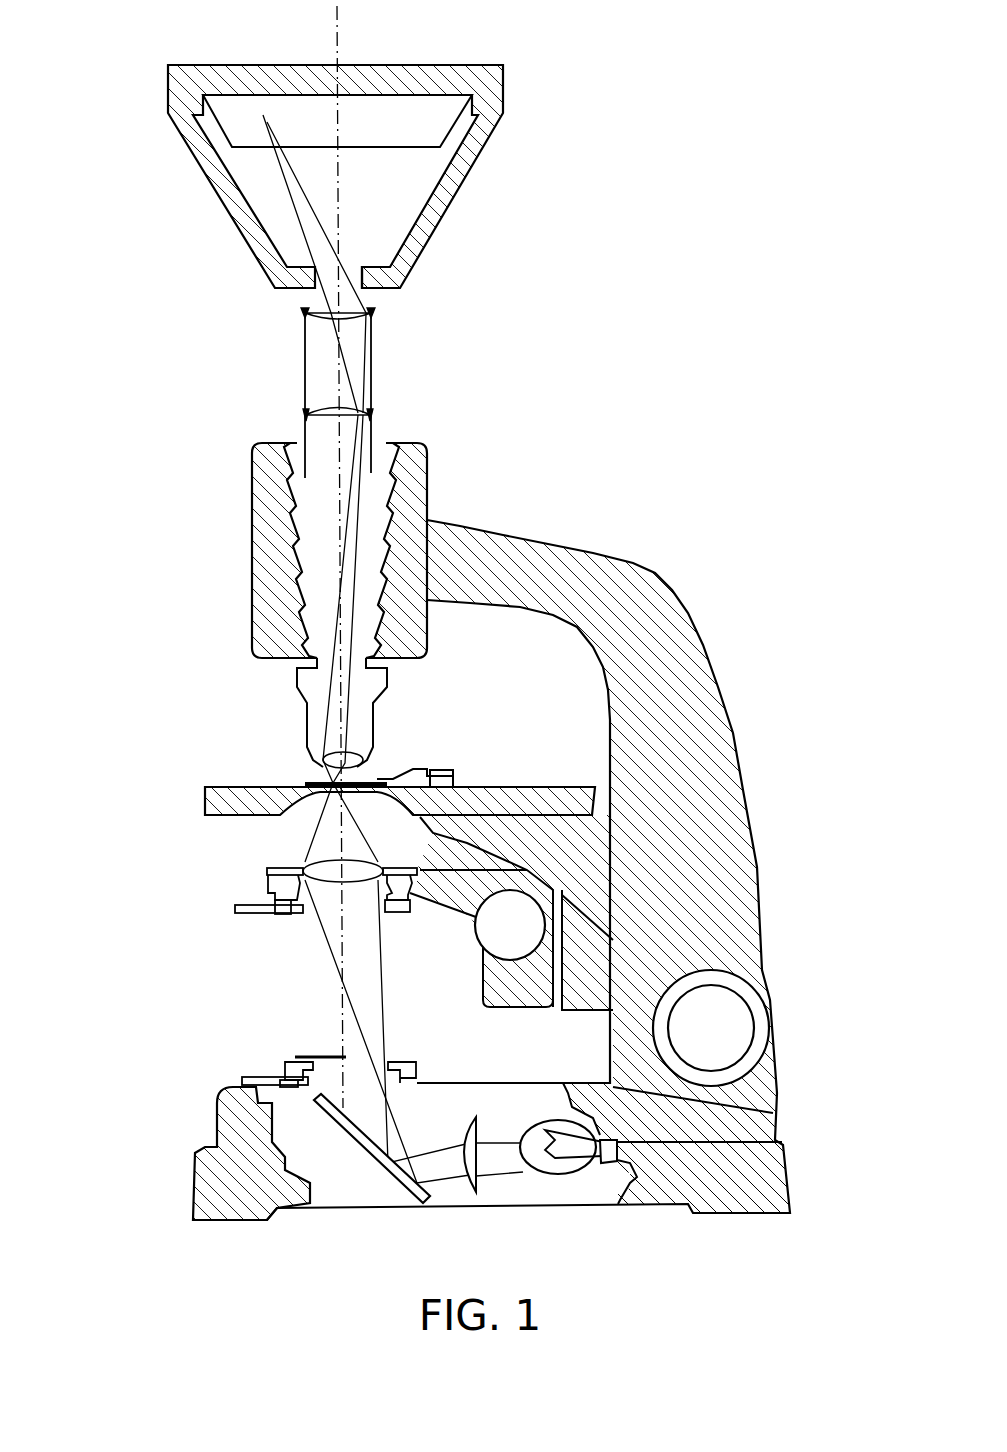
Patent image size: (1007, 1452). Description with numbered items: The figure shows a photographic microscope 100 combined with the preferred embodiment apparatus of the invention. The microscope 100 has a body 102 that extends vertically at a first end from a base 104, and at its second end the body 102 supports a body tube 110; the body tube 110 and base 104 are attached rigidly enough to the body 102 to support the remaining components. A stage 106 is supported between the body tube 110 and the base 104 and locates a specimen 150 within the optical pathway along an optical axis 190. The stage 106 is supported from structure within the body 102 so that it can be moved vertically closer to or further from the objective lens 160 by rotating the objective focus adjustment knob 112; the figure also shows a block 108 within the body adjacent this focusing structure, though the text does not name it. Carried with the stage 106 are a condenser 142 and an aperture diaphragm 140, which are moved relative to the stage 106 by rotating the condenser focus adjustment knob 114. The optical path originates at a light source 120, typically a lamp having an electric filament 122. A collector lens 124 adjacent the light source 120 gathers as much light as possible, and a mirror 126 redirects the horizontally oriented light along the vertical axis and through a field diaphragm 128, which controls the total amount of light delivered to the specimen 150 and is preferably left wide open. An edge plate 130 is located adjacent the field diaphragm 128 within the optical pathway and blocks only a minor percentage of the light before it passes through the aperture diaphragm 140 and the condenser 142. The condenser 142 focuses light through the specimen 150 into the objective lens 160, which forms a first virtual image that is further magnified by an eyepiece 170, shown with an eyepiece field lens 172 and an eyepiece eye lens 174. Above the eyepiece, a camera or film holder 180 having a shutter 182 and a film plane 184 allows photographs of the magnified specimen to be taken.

The microscope 100 is at (661, 52).
The body 102 is at (740, 790).
The base 104 is at (207, 1207).
The stage 106 is at (205, 803).
The focus guide block 108 is at (507, 1003).
The body tube 110 is at (417, 453).
The objective focus adjustment knob 112 is at (757, 1003).
The condenser focus adjustment knob 114 is at (525, 910).
The light source 120 is at (578, 1177).
The electric filament 122 is at (570, 1166).
The collector lens 124 is at (474, 1186).
The mirror 126 is at (398, 1173).
The field diaphragm 128 is at (242, 1080).
The edge plate 130 is at (346, 1058).
The aperture diaphragm 140 is at (242, 910).
The condenser 142 is at (307, 867).
The specimen 150 is at (327, 783).
The objective lens 160 is at (355, 760).
The eyepiece 170 is at (306, 352).
The eyepiece field lens 172 is at (306, 407).
The eyepiece eye lens 174 is at (304, 313).
The camera or film holder 180 is at (176, 86).
The shutter 182 is at (363, 277).
The film plane 184 is at (232, 123).
The optical axis 190 is at (337, 31).